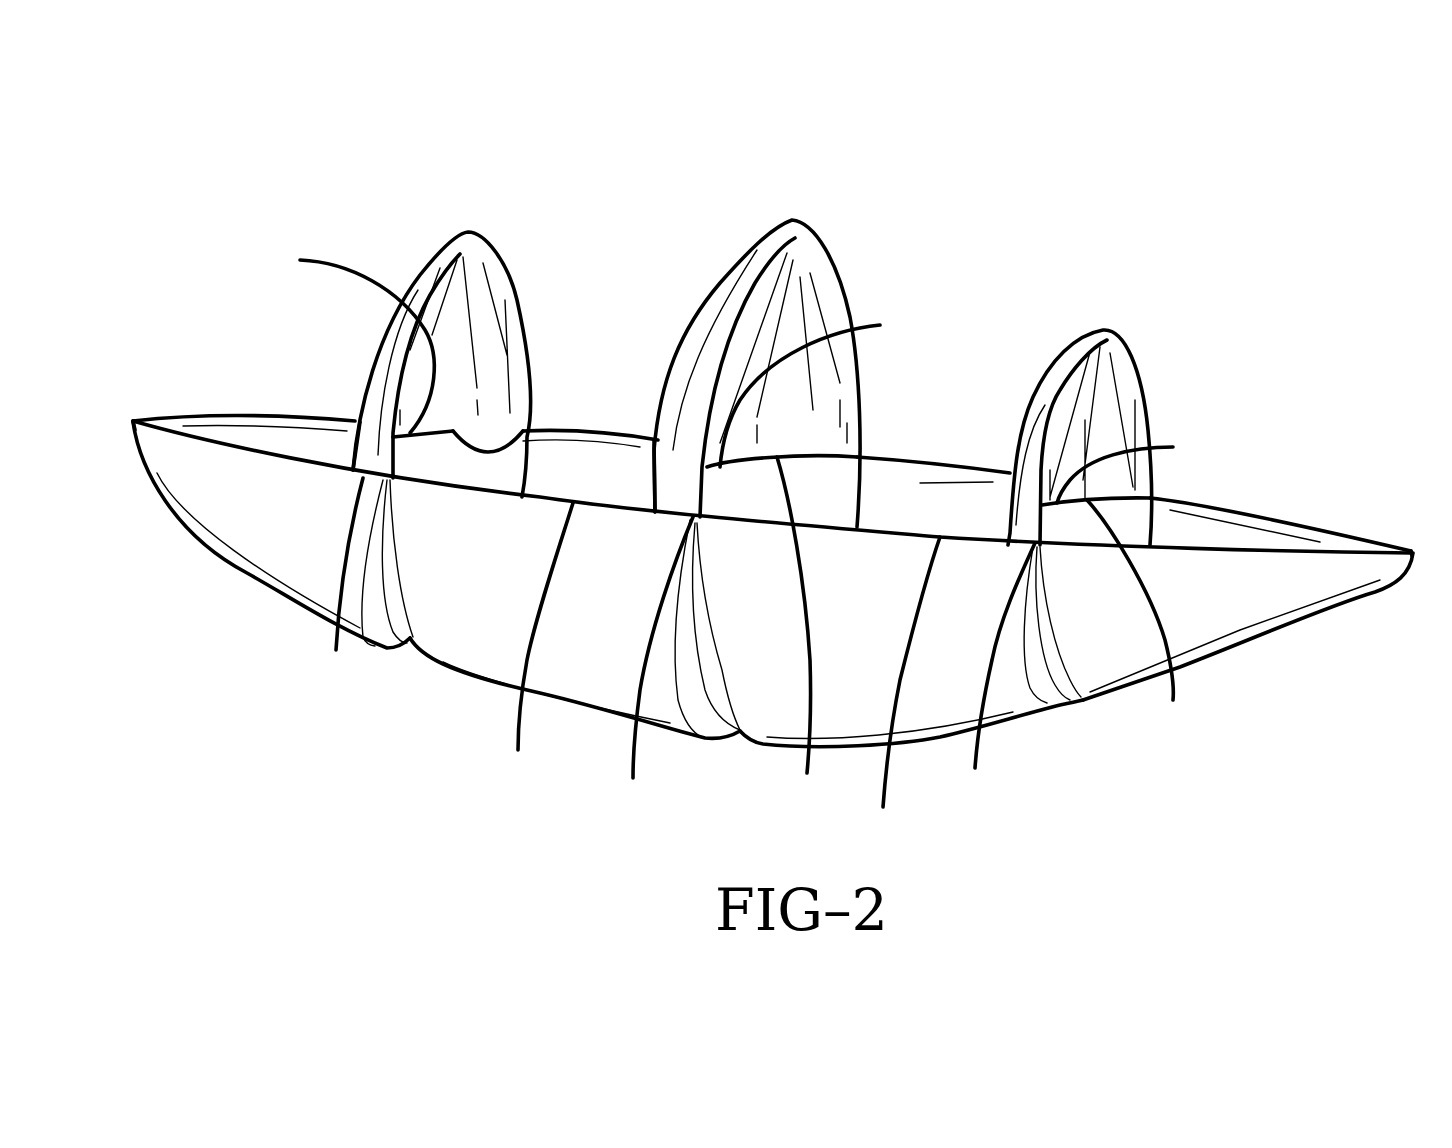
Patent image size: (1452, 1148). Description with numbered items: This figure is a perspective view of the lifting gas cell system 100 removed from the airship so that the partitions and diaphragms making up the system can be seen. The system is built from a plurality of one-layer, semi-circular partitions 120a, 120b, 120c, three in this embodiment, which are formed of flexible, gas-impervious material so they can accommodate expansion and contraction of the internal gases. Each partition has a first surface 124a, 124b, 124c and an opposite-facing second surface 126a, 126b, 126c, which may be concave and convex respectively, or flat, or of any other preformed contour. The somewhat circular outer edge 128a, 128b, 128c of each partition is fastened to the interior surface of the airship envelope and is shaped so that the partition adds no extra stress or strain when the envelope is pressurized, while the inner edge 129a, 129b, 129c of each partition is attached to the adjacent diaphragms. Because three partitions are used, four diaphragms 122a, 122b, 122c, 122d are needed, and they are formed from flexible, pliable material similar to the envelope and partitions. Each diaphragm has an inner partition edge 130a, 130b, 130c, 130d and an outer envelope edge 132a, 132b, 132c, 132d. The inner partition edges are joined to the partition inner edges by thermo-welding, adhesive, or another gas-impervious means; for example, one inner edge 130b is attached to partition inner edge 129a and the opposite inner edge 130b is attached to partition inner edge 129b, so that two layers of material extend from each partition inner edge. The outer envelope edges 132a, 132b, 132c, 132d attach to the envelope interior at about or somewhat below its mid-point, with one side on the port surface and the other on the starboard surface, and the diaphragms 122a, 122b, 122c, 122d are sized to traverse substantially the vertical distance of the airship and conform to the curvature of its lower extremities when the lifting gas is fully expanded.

The lifting gas cell system 100 is at (1365, 334).
The partition 120a is at (404, 417).
The partition 120b is at (782, 454).
The partition 120c is at (1098, 509).
The diaphragm 122a is at (238, 580).
The diaphragm 122b is at (438, 675).
The diaphragm 122c is at (762, 752).
The diaphragm 122d is at (1282, 630).
The first surface 124a is at (460, 252).
The first surface 124b is at (793, 254).
The first surface 124c is at (1110, 345).
The second surface 126a is at (383, 340).
The second surface 126b is at (720, 287).
The second surface 126c is at (1047, 380).
The outer edge 128a is at (437, 253).
The outer edge 128b is at (752, 245).
The outer edge 128c is at (1080, 340).
The inner edge 129a is at (300, 260).
The inner edge 129b is at (880, 325).
The inner edge 129c is at (1173, 447).
The inner partition edge 130a is at (355, 463).
The inner partition edge 130b is at (525, 432).
The inner partition edge 130c is at (1003, 525).
The inner partition edge 130d is at (1173, 700).
The outer envelope edge 132a is at (140, 420).
The outer envelope edge 132b is at (597, 430).
The outer envelope edge 132c is at (930, 467).
The outer envelope edge 132d is at (1406, 547).